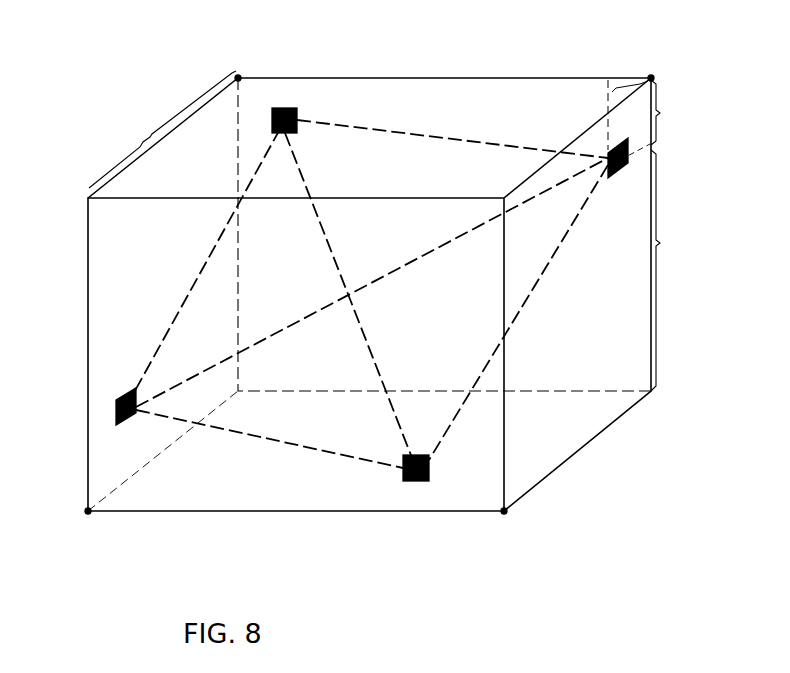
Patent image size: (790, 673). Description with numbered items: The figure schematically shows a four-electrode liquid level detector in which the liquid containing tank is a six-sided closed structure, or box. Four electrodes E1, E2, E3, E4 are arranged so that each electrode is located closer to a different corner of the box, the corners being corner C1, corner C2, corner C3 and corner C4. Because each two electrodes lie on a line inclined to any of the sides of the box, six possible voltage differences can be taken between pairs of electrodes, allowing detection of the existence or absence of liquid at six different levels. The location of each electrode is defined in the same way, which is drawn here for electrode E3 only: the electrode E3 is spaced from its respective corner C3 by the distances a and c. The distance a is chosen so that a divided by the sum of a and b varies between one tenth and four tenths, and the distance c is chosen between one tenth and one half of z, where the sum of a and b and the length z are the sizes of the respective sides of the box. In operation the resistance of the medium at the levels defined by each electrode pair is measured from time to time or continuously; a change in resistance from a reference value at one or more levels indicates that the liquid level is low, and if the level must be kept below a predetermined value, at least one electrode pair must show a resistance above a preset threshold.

The corner of the box C1 is at (88, 512).
The corner of the box C2 is at (238, 78).
The corner of the box C3 is at (651, 78).
The corner of the box C4 is at (504, 512).
The electrode E1 is at (118, 416).
The electrode E2 is at (285, 108).
The electrode E3 is at (630, 168).
The electrode E4 is at (417, 481).
The distance a is at (667, 112).
The distance b is at (665, 270).
The distance c is at (623, 115).
The size of side of the box z is at (162, 129).